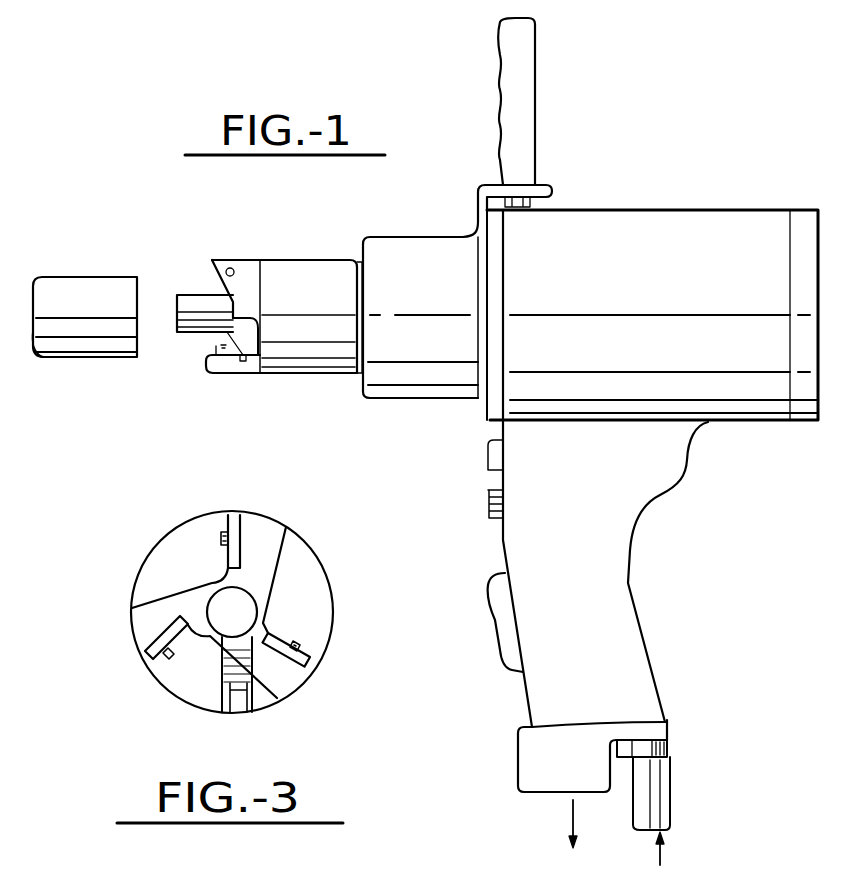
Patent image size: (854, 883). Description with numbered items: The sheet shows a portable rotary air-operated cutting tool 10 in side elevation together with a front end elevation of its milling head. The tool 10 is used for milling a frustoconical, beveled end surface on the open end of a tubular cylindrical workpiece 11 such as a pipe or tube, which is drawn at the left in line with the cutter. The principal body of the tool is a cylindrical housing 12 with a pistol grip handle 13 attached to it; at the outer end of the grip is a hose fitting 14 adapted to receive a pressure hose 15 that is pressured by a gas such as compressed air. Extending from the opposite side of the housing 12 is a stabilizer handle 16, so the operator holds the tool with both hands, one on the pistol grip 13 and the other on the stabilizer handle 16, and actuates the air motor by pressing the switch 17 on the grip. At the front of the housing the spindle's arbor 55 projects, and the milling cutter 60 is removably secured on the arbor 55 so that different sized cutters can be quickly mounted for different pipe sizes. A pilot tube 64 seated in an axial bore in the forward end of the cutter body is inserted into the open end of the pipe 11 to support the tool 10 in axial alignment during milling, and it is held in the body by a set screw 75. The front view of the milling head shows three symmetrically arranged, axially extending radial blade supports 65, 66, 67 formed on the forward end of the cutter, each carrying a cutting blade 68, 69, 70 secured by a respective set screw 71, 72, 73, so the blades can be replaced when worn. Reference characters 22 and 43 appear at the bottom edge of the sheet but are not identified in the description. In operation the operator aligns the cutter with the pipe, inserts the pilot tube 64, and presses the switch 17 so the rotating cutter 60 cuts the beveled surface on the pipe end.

In FIG. 1, the portable rotary cutting tool 10 is at (646, 209).
In FIG. 1, the tubular cylindrical workpiece 11 is at (97, 277).
In FIG. 1, the cylindrical housing 12 is at (742, 210).
In FIG. 1, the pistol grip handle 13 is at (628, 585).
In FIG. 1, the hose fitting 14 is at (520, 752).
In FIG. 1, the pressure hose 15 is at (665, 800).
In FIG. 1, the stabilizer handle 16 is at (525, 90).
In FIG. 1, the switch 17 is at (503, 628).
In FIG. 1, the element 22 is at (538, 882).
In FIG. 3, the element 43 is at (262, 882).
In FIG. 1, the arbor 55 is at (352, 262).
In FIG. 1, the milling cutter 60 is at (268, 260).
In FIG. 1, the pilot tube 64 is at (200, 300).
In FIG. 3, the radial blade support 65 is at (265, 520).
In FIG. 3, the radial blade support 66 is at (300, 678).
In FIG. 3, the radial blade support 67 is at (130, 628).
In FIG. 1, the cutting blade 68 is at (210, 355).
In FIG. 3, the cutting blade 68 is at (240, 513).
In FIG. 3, the cutting blade 69 is at (312, 656).
In FIG. 3, the cutting blade 70 is at (143, 650).
In FIG. 3, the set screw 71 is at (221, 538).
In FIG. 3, the set screw 72 is at (303, 641).
In FIG. 3, the set screw 73 is at (160, 667).
In FIG. 3, the set screw 75 is at (236, 705).